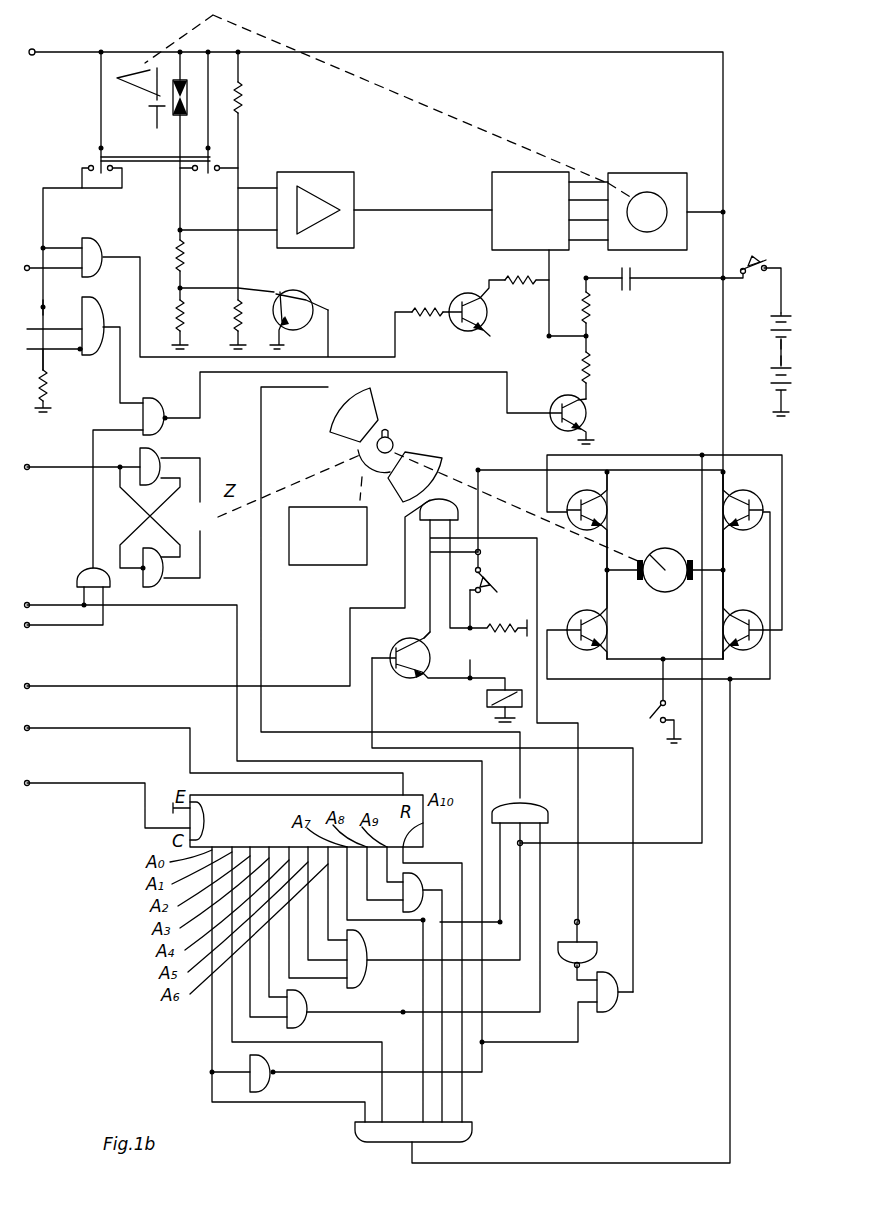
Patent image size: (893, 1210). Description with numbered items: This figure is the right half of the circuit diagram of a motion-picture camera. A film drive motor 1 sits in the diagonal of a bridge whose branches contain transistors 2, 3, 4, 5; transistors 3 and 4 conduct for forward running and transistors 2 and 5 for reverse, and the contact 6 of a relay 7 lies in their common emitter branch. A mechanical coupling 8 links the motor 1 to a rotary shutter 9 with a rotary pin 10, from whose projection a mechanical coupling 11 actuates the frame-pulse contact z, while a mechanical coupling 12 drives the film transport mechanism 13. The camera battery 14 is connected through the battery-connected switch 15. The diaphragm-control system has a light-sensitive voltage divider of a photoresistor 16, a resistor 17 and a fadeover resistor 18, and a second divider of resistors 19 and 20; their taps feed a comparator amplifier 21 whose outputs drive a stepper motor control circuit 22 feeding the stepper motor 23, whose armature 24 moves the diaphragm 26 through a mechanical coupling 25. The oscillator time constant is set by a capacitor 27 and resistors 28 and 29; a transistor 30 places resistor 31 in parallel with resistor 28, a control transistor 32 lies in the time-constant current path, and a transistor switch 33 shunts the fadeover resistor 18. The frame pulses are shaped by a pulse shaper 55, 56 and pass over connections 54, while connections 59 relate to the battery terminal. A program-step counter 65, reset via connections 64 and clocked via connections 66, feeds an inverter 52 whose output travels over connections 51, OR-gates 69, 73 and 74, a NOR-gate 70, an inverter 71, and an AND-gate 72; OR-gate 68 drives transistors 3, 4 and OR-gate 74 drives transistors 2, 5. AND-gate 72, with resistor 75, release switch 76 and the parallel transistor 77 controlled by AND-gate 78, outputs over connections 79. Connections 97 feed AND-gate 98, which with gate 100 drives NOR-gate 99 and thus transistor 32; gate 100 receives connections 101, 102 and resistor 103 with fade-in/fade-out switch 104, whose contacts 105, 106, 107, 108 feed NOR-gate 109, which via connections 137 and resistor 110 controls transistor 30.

The film drive motor 1 is at (650, 555).
The transistor 2 is at (605, 508).
The transistor 3 is at (605, 630).
The transistor 4 is at (740, 535).
The transistor 5 is at (750, 648).
The contact 6 is at (656, 724).
The relay 7 is at (487, 698).
The mechanical coupling 8 is at (456, 470).
The rotary shutter 9 is at (372, 406).
The rotary pin 10 is at (413, 432).
The mechanical coupling 11 is at (295, 483).
The mechanical coupling 12 is at (360, 479).
The film transport mechanism 13 is at (310, 565).
The camera battery 14 is at (772, 330).
The battery-connected switch 15 is at (745, 265).
The photoresistor 16 is at (182, 95).
The resistor 17 is at (178, 256).
The fadeover resistor 18 is at (178, 320).
The resistor 19 is at (242, 99).
The resistor 20 is at (236, 318).
The comparator amplifier 21 is at (318, 172).
The stepper motor control circuit 22 is at (495, 181).
The stepper motor 23 is at (625, 173).
The armature 24 is at (650, 192).
The mechanical coupling 25 is at (458, 118).
The diaphragm 26 is at (148, 76).
The capacitor 27 is at (630, 289).
The resistor 28 is at (590, 306).
The resistor 29 is at (590, 370).
The transistor 30 is at (455, 300).
The resistor 31 is at (520, 285).
The control transistor 32 is at (553, 403).
The transistor switch 33 is at (314, 296).
The connections 51 is at (28, 602).
The inverter 52 is at (272, 1083).
The connections 54 is at (28, 471).
The pulse shaper 55 is at (163, 456).
The pulse shaper 56 is at (145, 586).
The connections 59 is at (40, 50).
The connections 64 is at (30, 727).
The program-step counter 65 is at (228, 806).
The connections 66 is at (30, 782).
The OR-gate 68 is at (357, 1131).
The OR-gate 69 is at (308, 1011).
The NOR-gate 70 is at (525, 802).
The inverter 71 is at (585, 940).
The AND-gate 72 is at (445, 511).
The OR-gate 73 is at (422, 894).
The OR-gate 74 is at (370, 966).
The resistor 75 is at (496, 632).
The release switch 76 is at (486, 595).
The transistor 77 is at (403, 680).
The AND-gate 78 is at (615, 1006).
The connections 79 is at (30, 684).
The connections 97 is at (29, 628).
The AND-gate 98 is at (90, 568).
The NOR-gate 99 is at (143, 418).
The NAND-gate 100 is at (103, 312).
The connections 101 is at (30, 378).
The connections 102 is at (62, 302).
The resistor 103 is at (48, 385).
The fade-in/fade-out switch 104 is at (140, 157).
The contact 105 is at (88, 165).
The contact 106 is at (112, 172).
The contact 107 is at (196, 172).
The contact 108 is at (220, 165).
The NOR-gate 109 is at (94, 238).
The resistor 110 is at (424, 318).
The connections 137 is at (28, 264).